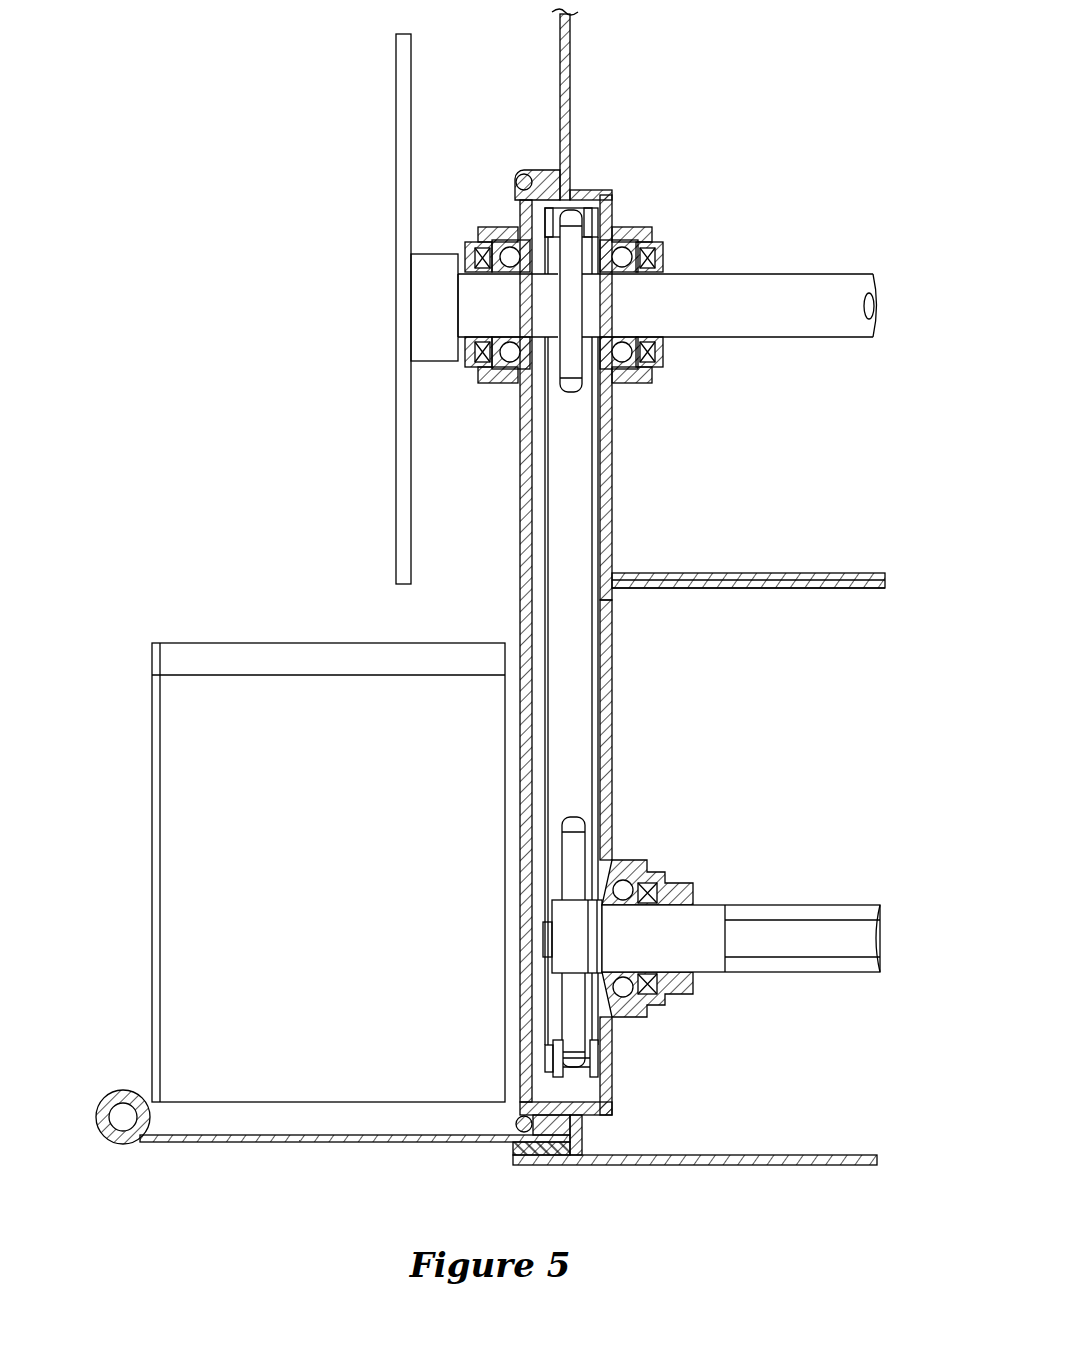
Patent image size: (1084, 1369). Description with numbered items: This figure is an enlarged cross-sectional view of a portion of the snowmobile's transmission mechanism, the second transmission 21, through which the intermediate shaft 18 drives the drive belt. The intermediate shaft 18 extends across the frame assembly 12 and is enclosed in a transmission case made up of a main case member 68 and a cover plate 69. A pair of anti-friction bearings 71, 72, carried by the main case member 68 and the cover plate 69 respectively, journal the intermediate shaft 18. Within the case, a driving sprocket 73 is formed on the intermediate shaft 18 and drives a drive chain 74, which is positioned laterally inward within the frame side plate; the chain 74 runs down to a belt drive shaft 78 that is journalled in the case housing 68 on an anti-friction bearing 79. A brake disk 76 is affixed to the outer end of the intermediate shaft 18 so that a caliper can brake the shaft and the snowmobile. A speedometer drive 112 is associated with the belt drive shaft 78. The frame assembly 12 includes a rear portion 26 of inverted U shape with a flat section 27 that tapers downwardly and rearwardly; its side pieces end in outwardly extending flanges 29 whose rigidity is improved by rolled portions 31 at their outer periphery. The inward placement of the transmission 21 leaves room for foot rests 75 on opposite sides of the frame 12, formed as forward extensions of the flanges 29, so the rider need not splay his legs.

The frame assembly 12 is at (757, 572).
The intermediate shaft 18 is at (740, 283).
The second transmission 21 is at (655, 531).
The rear portion 26 is at (818, 591).
The flat section 27 is at (820, 578).
The flanges 29 is at (325, 1135).
The rolled portions 31 is at (128, 1090).
The main case member 68 is at (615, 432).
The cover plate 69 is at (520, 490).
The anti-friction bearing 71 is at (620, 232).
The anti-friction bearing 72 is at (502, 236).
The driving sprocket 73 is at (578, 208).
The drive chain 74 is at (600, 680).
The foot rests 75 is at (234, 640).
The brake disk 76 is at (400, 97).
The belt drive shaft 78 is at (745, 905).
The anti-friction bearing 79 is at (620, 862).
The speedometer drive 112 is at (668, 885).